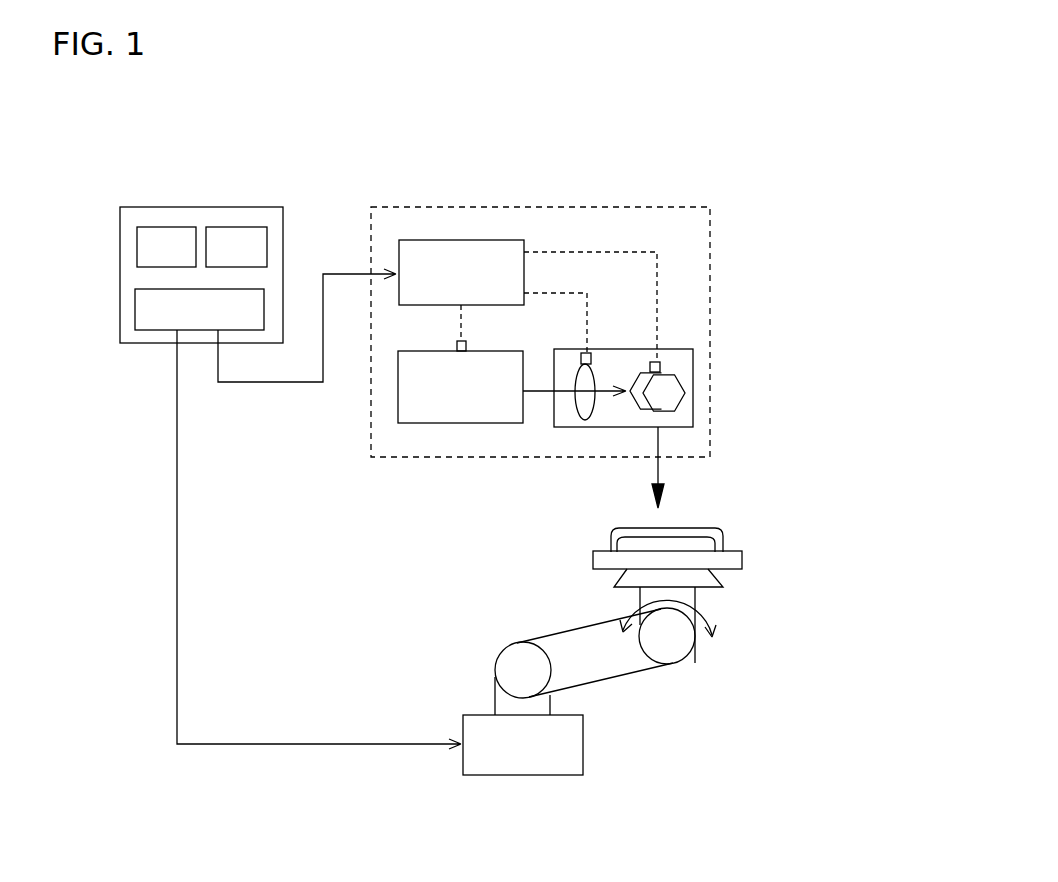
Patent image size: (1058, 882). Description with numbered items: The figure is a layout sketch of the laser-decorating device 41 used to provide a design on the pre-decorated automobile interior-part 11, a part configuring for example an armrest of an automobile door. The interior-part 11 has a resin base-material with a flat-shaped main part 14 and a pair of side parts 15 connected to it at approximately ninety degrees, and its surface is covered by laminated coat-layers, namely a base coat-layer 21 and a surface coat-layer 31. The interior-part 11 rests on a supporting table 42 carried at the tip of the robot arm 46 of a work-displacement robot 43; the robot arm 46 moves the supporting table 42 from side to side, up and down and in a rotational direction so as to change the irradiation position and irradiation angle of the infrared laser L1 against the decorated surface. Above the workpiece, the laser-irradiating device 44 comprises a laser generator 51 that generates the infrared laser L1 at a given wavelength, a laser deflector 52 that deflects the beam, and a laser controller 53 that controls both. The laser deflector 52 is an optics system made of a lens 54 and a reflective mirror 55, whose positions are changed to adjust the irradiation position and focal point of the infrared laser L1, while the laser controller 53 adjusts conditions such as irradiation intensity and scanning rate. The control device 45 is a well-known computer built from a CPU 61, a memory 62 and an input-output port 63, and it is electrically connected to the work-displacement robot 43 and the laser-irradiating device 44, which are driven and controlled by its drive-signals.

The laser-decorating device 41 is at (777, 158).
The laser-irradiating device 44 is at (665, 207).
The control device 45 is at (267, 207).
The CPU 61 is at (167, 227).
The memory 62 is at (232, 227).
The input-output port 63 is at (135, 310).
The laser controller 53 is at (460, 240).
The laser generator 51 is at (398, 403).
The laser deflector 52 is at (622, 349).
The lens 54 is at (582, 407).
The reflective mirror 55 is at (668, 388).
The infrared laser L1 is at (658, 445).
The automobile interior-part 11 is at (723, 529).
The main part 14 is at (682, 529).
The side parts 15 is at (613, 543).
The base coat-layer 21 is at (633, 529).
The surface coat-layer 31 is at (667, 540).
The supporting table 42 is at (743, 558).
The work-displacement robot 43 is at (622, 680).
The robot arm 46 is at (572, 640).